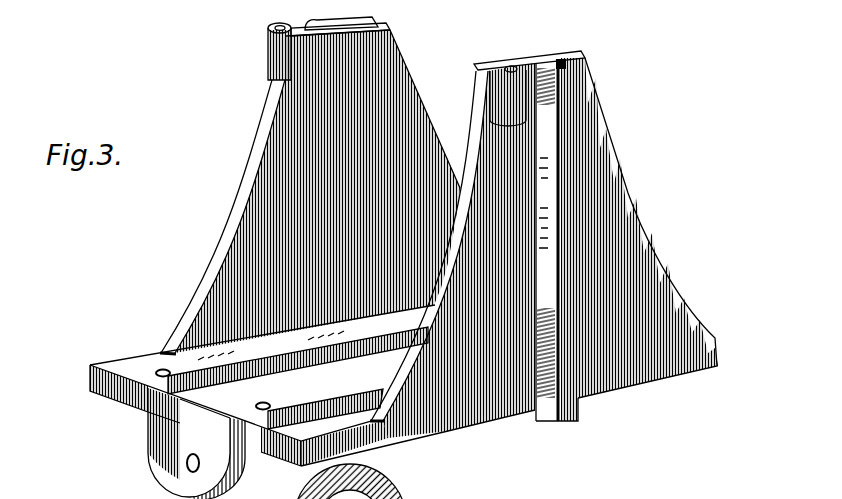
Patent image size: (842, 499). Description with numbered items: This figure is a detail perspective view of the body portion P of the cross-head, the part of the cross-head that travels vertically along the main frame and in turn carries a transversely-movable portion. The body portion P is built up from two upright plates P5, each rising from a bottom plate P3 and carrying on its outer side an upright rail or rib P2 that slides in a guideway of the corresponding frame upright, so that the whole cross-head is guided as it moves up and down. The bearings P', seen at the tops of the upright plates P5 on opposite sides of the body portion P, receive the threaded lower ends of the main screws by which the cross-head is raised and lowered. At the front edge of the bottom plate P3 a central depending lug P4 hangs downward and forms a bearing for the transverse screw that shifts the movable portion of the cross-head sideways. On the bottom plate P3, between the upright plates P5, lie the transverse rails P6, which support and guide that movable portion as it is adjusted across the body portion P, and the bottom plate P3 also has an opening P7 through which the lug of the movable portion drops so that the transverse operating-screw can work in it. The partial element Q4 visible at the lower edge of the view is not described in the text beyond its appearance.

The body portion of the cross-head P is at (310, 185).
The bearings P' is at (362, 74).
The upright rails or ribs P2 is at (558, 122).
The bottom plate P3 is at (137, 398).
The central depending lug P4 is at (167, 447).
The upright plates P5 is at (676, 222).
The transverse rails P6 is at (262, 478).
The opening P7 is at (193, 400).
The ring Q4 is at (431, 498).